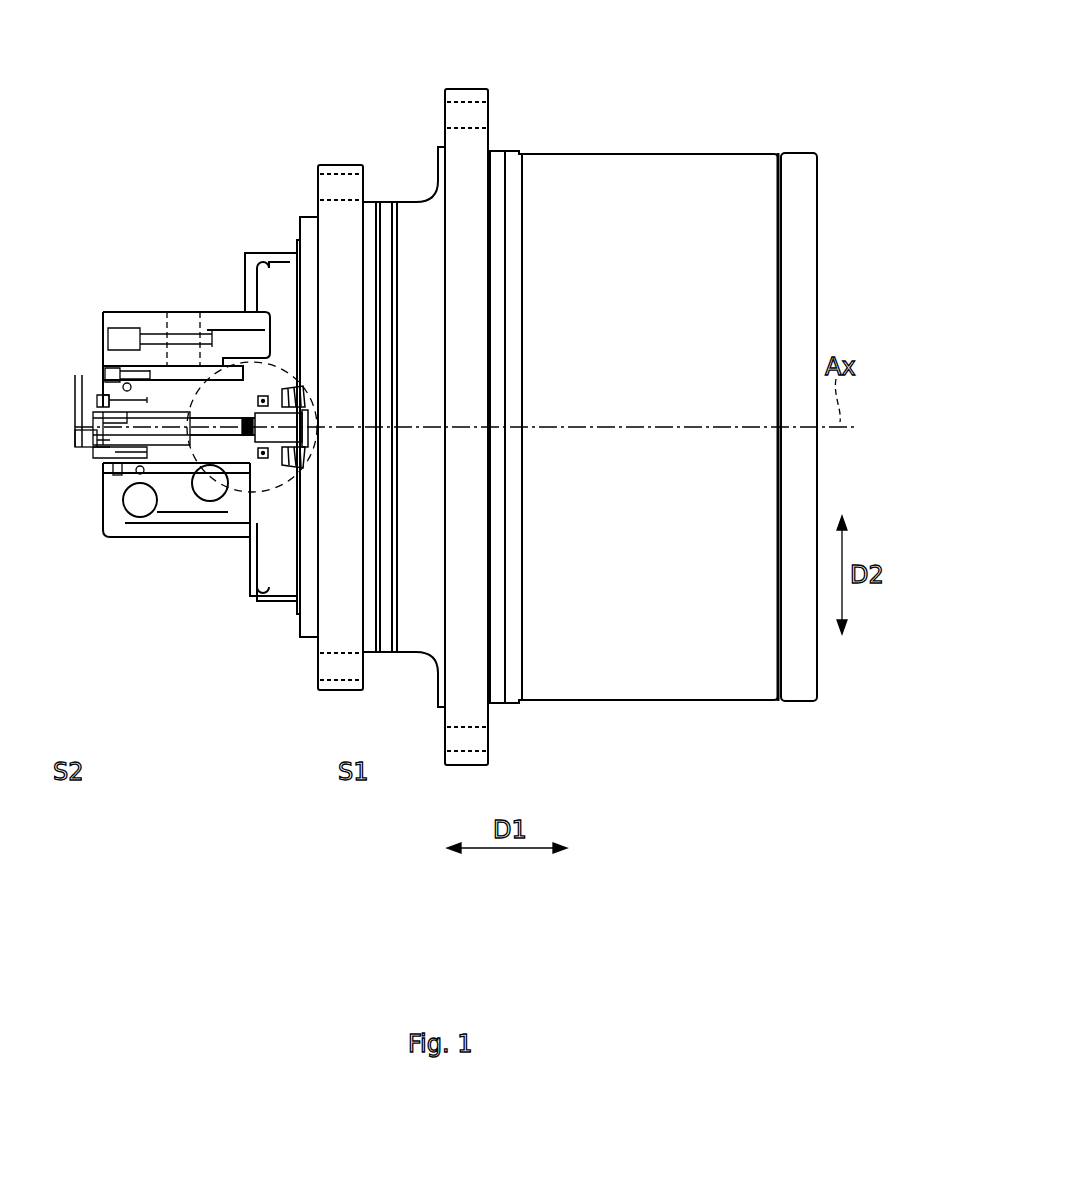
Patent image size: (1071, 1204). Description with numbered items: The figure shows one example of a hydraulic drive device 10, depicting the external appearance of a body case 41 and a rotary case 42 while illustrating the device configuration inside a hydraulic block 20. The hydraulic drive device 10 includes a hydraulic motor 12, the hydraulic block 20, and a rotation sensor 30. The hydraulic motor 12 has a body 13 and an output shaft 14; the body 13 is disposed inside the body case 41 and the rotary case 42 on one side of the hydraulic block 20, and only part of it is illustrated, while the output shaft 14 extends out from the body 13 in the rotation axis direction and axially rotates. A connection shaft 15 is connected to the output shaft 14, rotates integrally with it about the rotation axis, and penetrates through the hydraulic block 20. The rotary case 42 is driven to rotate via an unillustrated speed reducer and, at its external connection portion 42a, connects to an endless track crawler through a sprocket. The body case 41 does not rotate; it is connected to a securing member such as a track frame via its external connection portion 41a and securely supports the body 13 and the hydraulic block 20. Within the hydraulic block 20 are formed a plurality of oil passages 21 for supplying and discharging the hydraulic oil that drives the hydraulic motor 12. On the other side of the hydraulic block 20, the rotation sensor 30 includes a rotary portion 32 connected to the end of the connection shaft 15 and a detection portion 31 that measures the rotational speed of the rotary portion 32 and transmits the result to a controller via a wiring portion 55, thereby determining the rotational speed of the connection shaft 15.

The hydraulic drive device 10 is at (755, 99).
The hydraulic motor 12 is at (237, 514).
The body 13 is at (267, 463).
The output shaft 14 is at (265, 440).
The connection shaft 15 is at (180, 434).
The hydraulic block 20 is at (143, 318).
The oil passages 21 is at (182, 322).
The rotation sensor 30 is at (77, 459).
The detection portion 31 is at (83, 402).
The rotary portion 32 is at (81, 450).
The body case 41 is at (320, 207).
The external connection portion 41a is at (367, 187).
The rotary case 42 is at (650, 182).
The external connection portion 42a is at (478, 123).
The wiring portion 55 is at (76, 395).